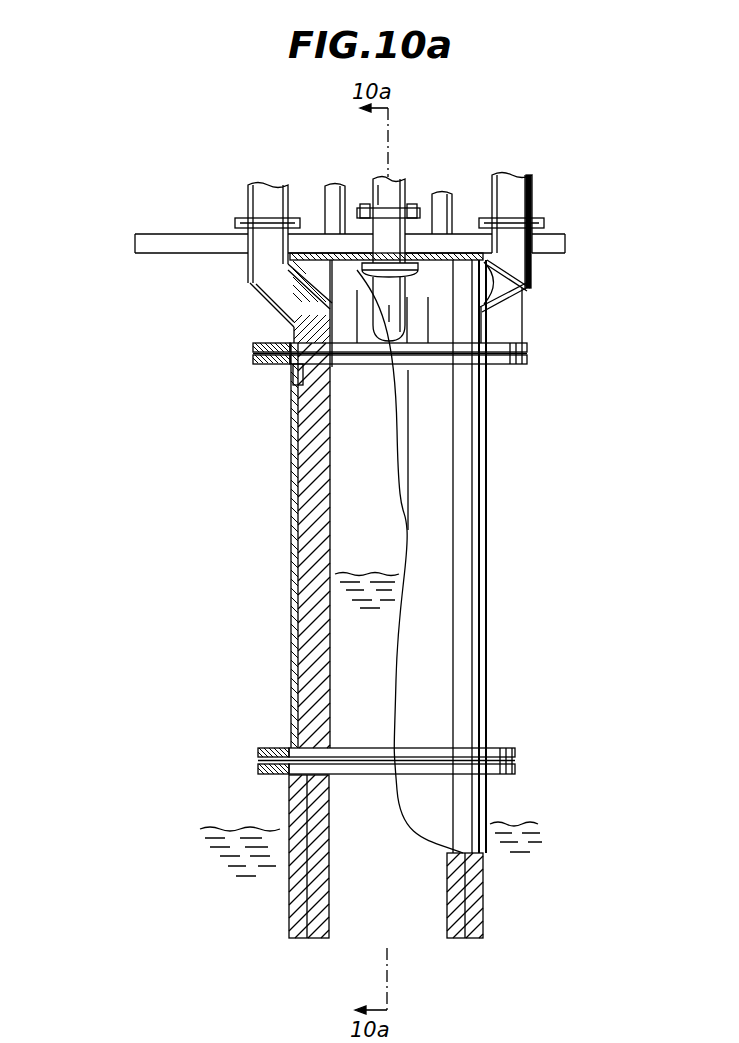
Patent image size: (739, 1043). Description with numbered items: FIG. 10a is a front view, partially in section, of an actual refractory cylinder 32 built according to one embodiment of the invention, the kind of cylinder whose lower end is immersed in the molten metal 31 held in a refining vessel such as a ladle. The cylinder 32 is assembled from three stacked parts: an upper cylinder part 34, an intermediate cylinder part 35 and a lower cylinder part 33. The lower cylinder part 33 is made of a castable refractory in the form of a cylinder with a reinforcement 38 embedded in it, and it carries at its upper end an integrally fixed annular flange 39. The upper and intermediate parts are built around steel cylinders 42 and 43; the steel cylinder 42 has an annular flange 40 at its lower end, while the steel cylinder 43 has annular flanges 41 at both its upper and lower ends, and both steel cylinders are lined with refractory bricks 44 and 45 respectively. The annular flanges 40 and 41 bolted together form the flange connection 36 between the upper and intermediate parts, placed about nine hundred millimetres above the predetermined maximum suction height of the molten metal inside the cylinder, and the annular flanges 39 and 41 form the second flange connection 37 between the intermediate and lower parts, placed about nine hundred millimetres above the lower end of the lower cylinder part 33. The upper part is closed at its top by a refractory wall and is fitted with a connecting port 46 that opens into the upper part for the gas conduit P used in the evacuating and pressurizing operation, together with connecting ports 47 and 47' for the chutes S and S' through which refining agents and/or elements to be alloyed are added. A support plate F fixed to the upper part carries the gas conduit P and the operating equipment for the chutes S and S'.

The molten metal 31 is at (250, 827).
The refractory cylinder 32 is at (488, 466).
The lower cylinder part 33 is at (292, 899).
The upper cylinder part 34 is at (513, 322).
The intermediate cylinder part 35 is at (462, 573).
The flange connection 36 is at (527, 354).
The flange connection 37 is at (513, 748).
The reinforcement 38 is at (298, 854).
The annular flange 39 is at (265, 773).
The annular flange 40 is at (258, 347).
The annular flange 41 is at (262, 364).
The steel cylinder 42 is at (290, 331).
The steel cylinder 43 is at (296, 521).
The refractory bricks 44 is at (322, 252).
The refractory bricks 45 is at (308, 459).
The connecting port 46 is at (405, 318).
The connecting port 47 is at (258, 294).
The connecting port 47' is at (544, 286).
The chute S is at (253, 227).
The chute S' is at (524, 232).
The gas conduit P is at (404, 191).
The support plate F is at (552, 237).